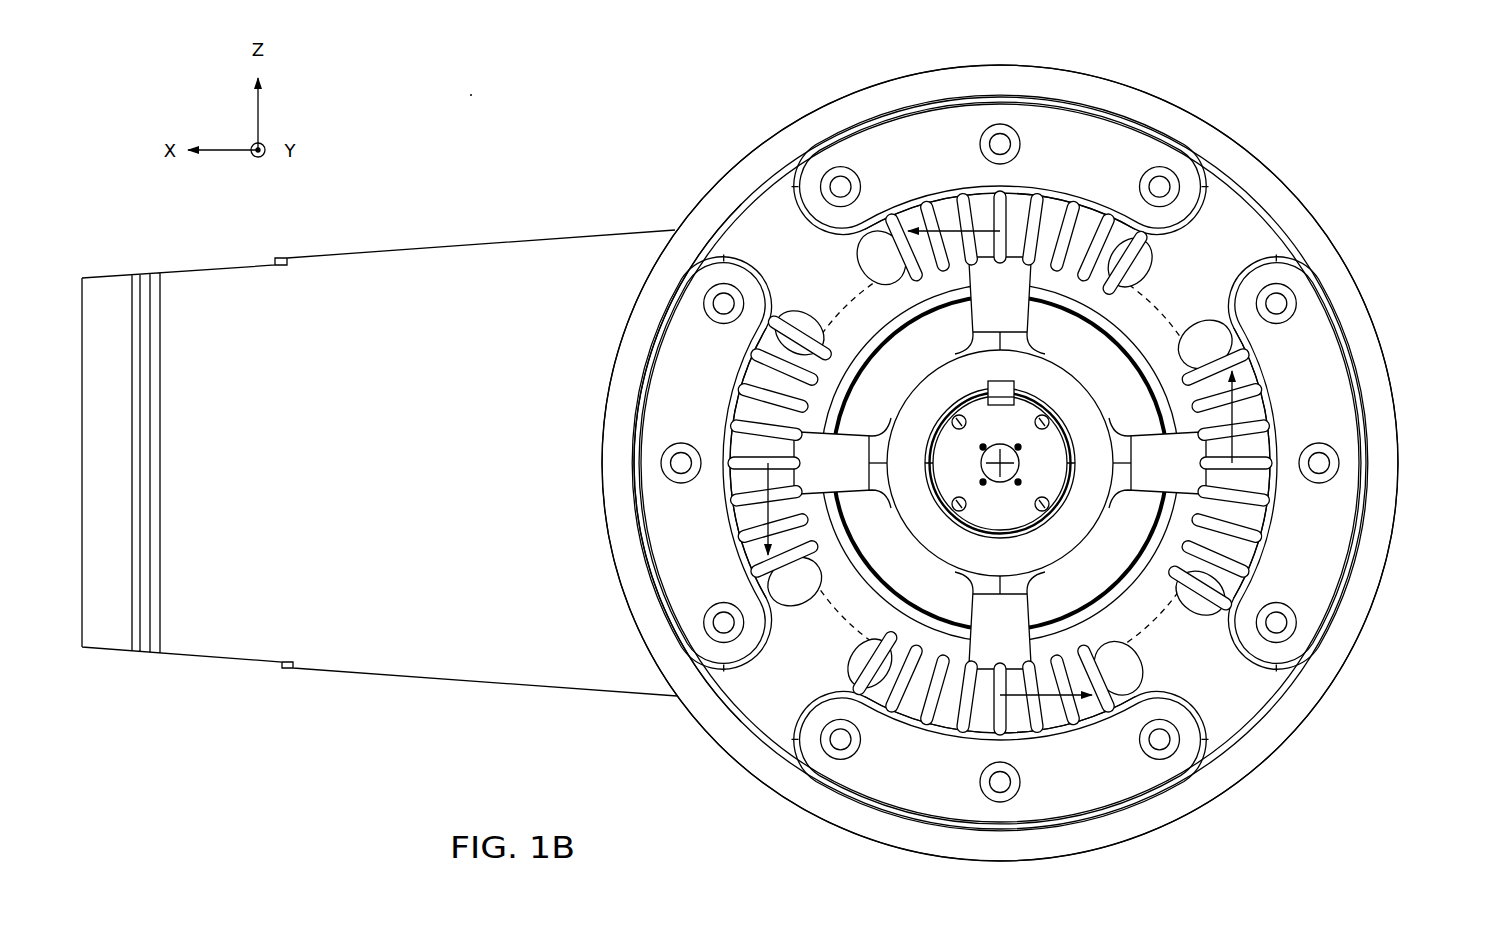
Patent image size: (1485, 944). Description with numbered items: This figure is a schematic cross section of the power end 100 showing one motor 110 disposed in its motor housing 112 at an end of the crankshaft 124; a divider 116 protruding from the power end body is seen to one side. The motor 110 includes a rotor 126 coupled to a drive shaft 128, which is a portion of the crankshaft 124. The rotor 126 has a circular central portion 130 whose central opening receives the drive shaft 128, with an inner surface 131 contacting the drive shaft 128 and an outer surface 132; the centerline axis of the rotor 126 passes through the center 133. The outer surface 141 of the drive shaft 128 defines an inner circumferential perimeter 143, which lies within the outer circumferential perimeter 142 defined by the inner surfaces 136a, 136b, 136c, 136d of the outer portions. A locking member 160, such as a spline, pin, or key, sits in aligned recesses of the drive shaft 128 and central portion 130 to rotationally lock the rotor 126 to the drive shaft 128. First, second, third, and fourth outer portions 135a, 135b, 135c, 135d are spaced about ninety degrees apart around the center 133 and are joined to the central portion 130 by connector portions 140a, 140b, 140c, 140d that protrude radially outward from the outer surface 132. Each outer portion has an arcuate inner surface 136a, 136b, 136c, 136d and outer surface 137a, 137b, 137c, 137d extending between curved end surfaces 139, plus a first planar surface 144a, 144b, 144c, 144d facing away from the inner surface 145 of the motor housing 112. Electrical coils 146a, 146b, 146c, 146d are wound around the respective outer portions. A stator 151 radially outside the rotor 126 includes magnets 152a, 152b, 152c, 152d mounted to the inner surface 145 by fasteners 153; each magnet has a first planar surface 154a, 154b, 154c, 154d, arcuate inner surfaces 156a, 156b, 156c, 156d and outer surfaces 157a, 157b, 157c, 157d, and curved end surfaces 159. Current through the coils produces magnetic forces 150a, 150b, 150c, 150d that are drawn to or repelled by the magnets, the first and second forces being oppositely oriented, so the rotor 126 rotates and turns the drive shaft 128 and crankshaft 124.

The power end 100 is at (538, 112).
The motor 110 is at (1250, 782).
The motor housing 112 is at (1316, 690).
The divider 116 is at (468, 244).
The crankshaft 124 is at (1070, 430).
The rotor 126 is at (903, 532).
The drive shaft 128 is at (978, 412).
The central portion 130 is at (1067, 527).
The inner surface 131 is at (1075, 492).
The outer surface 132 is at (1062, 565).
The center 133 is at (996, 462).
The first outer portion 135a is at (1160, 253).
The second outer portion 135b is at (846, 670).
The third outer portion 135c is at (790, 309).
The fourth outer portion 135d is at (1208, 625).
The inner surface 136a is at (958, 262).
The inner surface 136b is at (1057, 732).
The inner surface 136c is at (740, 515).
The inner surface 136d is at (1255, 410).
The outer surface 137a is at (905, 128).
The outer surface 137b is at (1167, 762).
The outer surface 137c is at (710, 625).
The outer surface 137d is at (1258, 348).
The curved end surface 139 is at (860, 270).
The connector portion 140a is at (983, 292).
The connector portion 140b is at (980, 644).
The connector portion 140c is at (818, 472).
The connector portion 140d is at (1143, 472).
The outer surface 141 is at (945, 480).
The outer circumferential perimeter 142 is at (880, 350).
The inner circumferential perimeter 143 is at (967, 533).
The first planar surface 144a is at (1052, 220).
The first planar surface 144b is at (958, 735).
The first planar surface 144c is at (757, 413).
The first planar surface 144d is at (1247, 513).
The inner surface 145 is at (1270, 727).
The first plurality of electrical coils 146a is at (962, 197).
The second plurality of electrical coils 146b is at (1032, 722).
The third plurality of electrical coils 146c is at (745, 493).
The fourth plurality of electrical coils 146d is at (1268, 436).
The first magnetic force 150a is at (930, 224).
The second magnetic force 150b is at (1070, 718).
The third magnetic force 150c is at (752, 560).
The fourth magnetic force 150d is at (1240, 392).
The stator 151 is at (645, 336).
The magnet 152a is at (976, 94).
The magnet 152b is at (1021, 830).
The magnet 152c is at (628, 488).
The magnet 152d is at (1369, 440).
The fastener 153 is at (702, 300).
The first planar surface 154a is at (912, 120).
The first planar surface 154b is at (1103, 820).
The first planar surface 154c is at (645, 554).
The first planar surface 154d is at (1352, 374).
The inner surface 156a is at (1122, 207).
The inner surface 156b is at (918, 745).
The inner surface 156c is at (757, 340).
The inner surface 156d is at (1280, 553).
The outer surface 157a is at (1066, 90).
The outer surface 157b is at (933, 842).
The outer surface 157c is at (618, 367).
The outer surface 157d is at (1380, 546).
The curved end surface 159 is at (795, 210).
The locking member 160 is at (1014, 395).